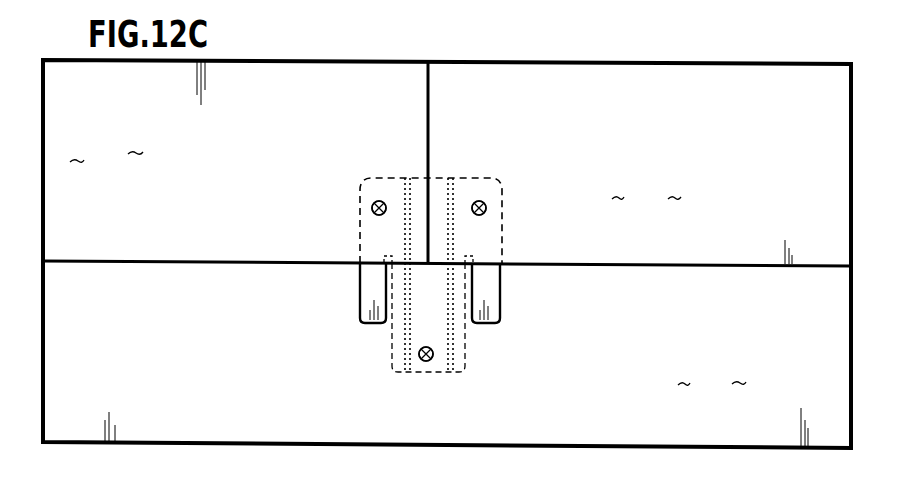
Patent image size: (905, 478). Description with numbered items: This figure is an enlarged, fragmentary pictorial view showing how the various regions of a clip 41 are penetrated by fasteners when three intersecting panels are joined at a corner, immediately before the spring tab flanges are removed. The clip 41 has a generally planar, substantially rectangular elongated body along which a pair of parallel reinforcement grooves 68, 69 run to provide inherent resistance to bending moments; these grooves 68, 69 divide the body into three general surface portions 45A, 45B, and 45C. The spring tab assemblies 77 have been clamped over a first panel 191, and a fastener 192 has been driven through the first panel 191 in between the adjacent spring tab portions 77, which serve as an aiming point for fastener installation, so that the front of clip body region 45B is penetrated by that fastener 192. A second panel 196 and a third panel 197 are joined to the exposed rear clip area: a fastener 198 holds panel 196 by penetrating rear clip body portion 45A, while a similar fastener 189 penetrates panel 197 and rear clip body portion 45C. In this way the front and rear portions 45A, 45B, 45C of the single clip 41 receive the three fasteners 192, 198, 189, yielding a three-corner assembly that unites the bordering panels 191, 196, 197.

The clip 41 is at (447, 176).
The reinforcement groove 69 is at (407, 178).
The reinforcement groove 68 is at (447, 178).
The rear clip body portion 45A is at (366, 194).
The fastener 198 is at (373, 214).
The fastener 189 is at (486, 206).
The rear clip body portion 45C is at (486, 247).
The spring tab assembly 77 is at (371, 282).
The fastener 192 is at (426, 362).
The clip body region 45B is at (434, 363).
The panel 196 is at (106, 162).
The panel 197 is at (646, 200).
The first panel 191 is at (712, 385).